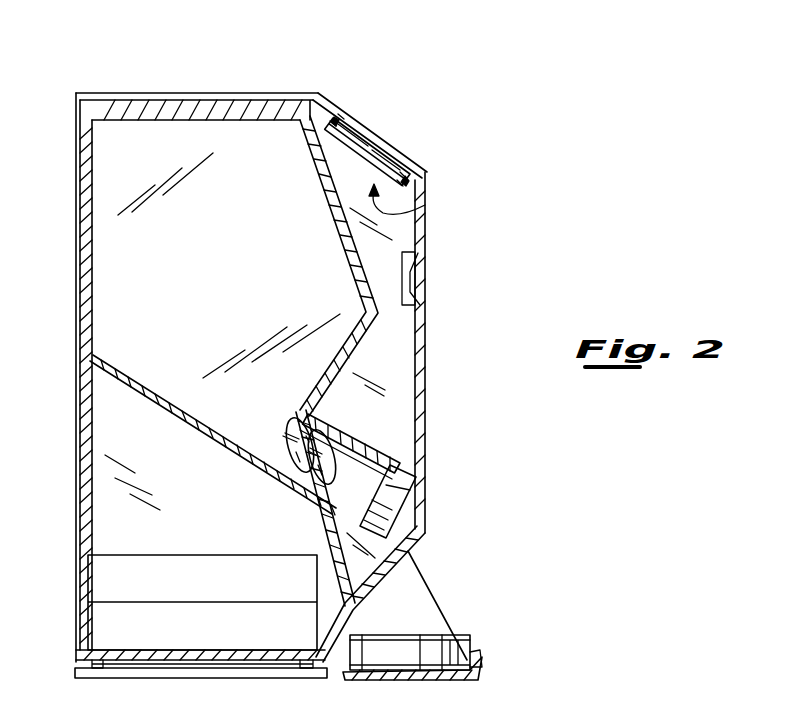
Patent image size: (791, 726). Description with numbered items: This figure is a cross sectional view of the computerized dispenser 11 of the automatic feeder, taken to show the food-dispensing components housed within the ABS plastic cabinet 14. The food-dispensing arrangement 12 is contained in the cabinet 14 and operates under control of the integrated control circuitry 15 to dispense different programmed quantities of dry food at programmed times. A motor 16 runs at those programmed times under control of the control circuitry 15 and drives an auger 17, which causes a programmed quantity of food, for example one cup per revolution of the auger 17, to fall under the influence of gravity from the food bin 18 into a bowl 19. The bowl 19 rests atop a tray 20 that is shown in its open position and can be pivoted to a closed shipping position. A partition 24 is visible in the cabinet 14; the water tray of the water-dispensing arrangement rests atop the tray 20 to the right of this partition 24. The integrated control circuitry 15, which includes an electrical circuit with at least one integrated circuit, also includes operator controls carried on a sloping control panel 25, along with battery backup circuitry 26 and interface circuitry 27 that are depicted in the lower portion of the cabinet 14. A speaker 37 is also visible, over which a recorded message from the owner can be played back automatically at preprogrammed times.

The computerized dispenser 11 is at (160, 90).
The food-dispensing arrangement 12 is at (365, 436).
The cabinet 14 is at (75, 432).
The integrated control circuitry 15 is at (425, 205).
The motor 16 is at (397, 493).
The auger 17 is at (288, 470).
The food bin 18 is at (167, 408).
The bowl 19 is at (468, 643).
The tray 20 is at (485, 666).
The partition 24 is at (433, 578).
The sloping control panel 25 is at (383, 138).
The battery backup circuitry 26 is at (113, 650).
The interface circuitry 27 is at (92, 584).
The speaker 37 is at (430, 290).